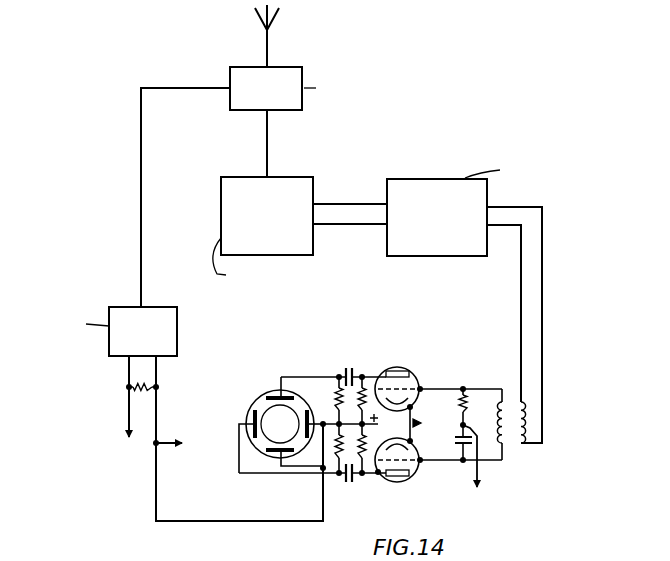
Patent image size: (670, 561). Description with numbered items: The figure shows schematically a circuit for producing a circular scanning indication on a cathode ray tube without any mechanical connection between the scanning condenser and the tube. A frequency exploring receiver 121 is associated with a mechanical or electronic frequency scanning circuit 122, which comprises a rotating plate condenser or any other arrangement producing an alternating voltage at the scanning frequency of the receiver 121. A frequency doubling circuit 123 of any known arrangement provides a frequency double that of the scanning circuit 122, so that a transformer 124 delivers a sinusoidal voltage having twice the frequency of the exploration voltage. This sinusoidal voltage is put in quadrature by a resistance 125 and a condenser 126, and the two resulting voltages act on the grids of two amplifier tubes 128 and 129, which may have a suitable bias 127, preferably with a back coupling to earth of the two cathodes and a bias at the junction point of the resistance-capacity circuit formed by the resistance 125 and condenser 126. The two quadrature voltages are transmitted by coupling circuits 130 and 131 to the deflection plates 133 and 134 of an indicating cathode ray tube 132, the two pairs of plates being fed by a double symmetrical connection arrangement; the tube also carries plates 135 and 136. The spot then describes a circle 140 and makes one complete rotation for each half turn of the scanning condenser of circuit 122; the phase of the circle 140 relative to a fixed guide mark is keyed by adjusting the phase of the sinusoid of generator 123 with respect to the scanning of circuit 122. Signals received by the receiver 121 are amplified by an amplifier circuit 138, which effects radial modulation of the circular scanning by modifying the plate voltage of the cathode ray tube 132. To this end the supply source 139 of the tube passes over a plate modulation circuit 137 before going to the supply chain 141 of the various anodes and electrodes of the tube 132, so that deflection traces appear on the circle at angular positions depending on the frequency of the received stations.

The frequency exploring receiver 121 is at (314, 88).
The frequency scanning circuit 122 is at (263, 241).
The frequency doubling circuit 123 is at (485, 203).
The transformer 124 is at (508, 445).
The resistance 125 is at (461, 402).
The condenser 126 is at (458, 441).
The bias 127 is at (477, 469).
The amplifier tube 128 is at (405, 362).
The amplifier tube 129 is at (390, 482).
The coupling circuit 130 is at (352, 479).
The coupling circuit 131 is at (350, 372).
The indicating cathode ray tube 132 is at (268, 393).
The deflection plate 133 is at (284, 393).
The deflection plate 134 is at (235, 441).
The deflection plate 135 is at (276, 454).
The deflection plate 136 is at (306, 440).
The plate modulation circuit 137 is at (150, 390).
The amplifier circuit 138 is at (99, 331).
The supply source 139 is at (126, 412).
The circle 140 is at (271, 411).
The supply chain 141 is at (183, 431).